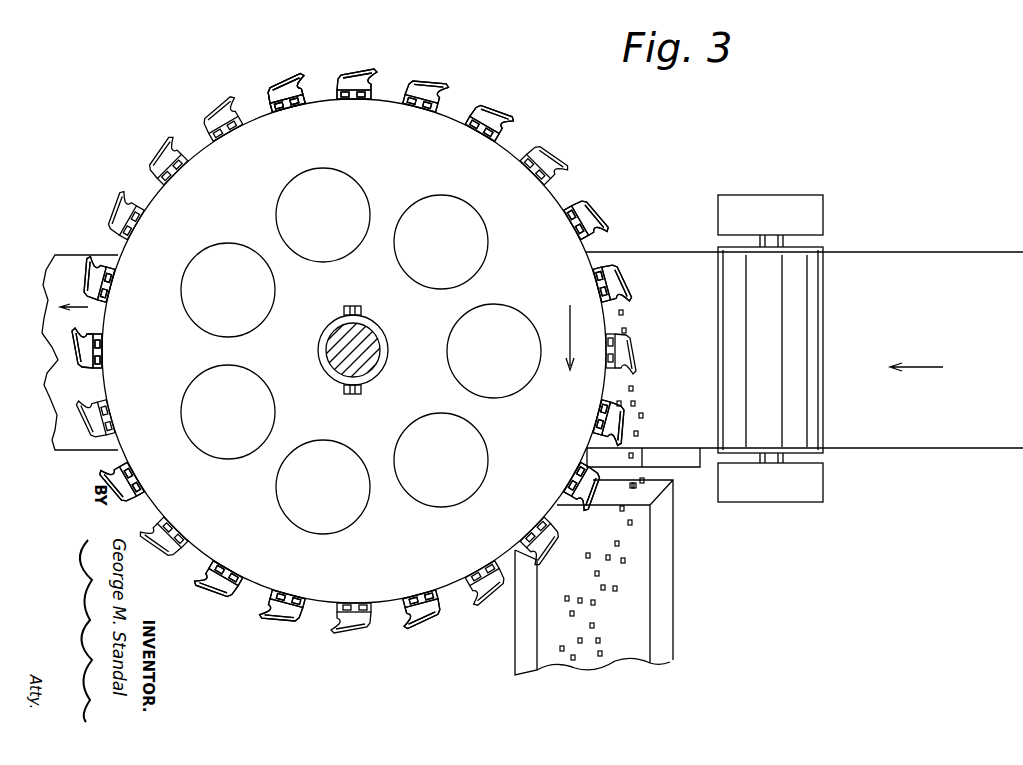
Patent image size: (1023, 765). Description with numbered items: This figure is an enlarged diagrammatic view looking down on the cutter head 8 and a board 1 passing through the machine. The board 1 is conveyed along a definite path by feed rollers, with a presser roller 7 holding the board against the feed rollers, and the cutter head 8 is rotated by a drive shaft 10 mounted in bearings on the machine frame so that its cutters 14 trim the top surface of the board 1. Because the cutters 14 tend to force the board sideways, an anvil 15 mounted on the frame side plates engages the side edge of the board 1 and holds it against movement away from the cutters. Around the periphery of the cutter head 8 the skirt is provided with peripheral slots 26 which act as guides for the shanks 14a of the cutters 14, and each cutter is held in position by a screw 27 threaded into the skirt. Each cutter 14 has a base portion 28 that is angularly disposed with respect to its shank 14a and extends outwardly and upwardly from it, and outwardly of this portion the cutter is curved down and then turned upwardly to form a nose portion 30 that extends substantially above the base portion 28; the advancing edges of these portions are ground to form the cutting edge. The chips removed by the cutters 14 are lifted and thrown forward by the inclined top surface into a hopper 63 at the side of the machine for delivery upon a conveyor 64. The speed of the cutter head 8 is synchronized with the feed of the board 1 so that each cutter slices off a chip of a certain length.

The board 1 is at (980, 353).
The presser roller 7 is at (813, 380).
The cutter head 8 is at (569, 199).
The drive shaft 10 is at (380, 344).
The cutters 14 is at (181, 128).
The shank 14a is at (478, 128).
The anvil 15 is at (668, 450).
The peripheral slots 26 is at (592, 278).
The screws 27 is at (293, 106).
The base portion 28 is at (343, 80).
The nose portion 30 is at (92, 255).
The hopper 63 is at (668, 663).
The conveyor 64 is at (632, 660).